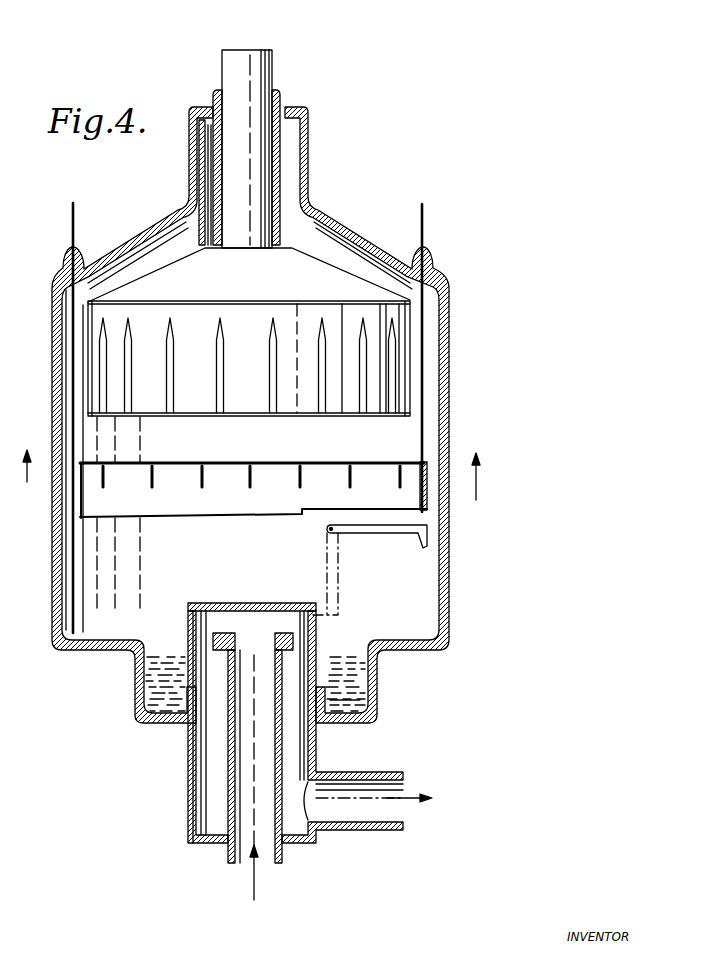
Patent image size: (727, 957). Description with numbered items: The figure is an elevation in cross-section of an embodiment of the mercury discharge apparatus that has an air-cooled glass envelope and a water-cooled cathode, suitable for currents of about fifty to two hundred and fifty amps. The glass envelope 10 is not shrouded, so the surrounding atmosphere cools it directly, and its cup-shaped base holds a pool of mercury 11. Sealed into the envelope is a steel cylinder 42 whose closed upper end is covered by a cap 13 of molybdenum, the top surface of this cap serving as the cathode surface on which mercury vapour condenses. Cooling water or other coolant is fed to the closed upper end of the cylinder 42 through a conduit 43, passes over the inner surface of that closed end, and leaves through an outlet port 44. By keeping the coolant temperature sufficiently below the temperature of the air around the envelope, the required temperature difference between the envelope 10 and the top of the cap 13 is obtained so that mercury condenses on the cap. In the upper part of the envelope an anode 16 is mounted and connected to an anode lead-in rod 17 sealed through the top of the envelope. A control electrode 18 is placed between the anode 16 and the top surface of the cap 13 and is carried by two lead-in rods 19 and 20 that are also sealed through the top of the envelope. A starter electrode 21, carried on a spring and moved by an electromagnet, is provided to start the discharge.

The envelope 10 is at (347, 229).
The pool of mercury 11 is at (360, 693).
The cap 13 is at (269, 603).
The anode 16 is at (307, 398).
The anode lead-in rod 17 is at (269, 79).
The control electrode 18 is at (401, 462).
The lead-in rod 19 is at (425, 224).
The lead-in rod 20 is at (70, 223).
The starter electrode 21 is at (340, 576).
The steel cylinder 42 is at (191, 790).
The conduit 43 is at (281, 770).
The outlet port 44 is at (357, 810).